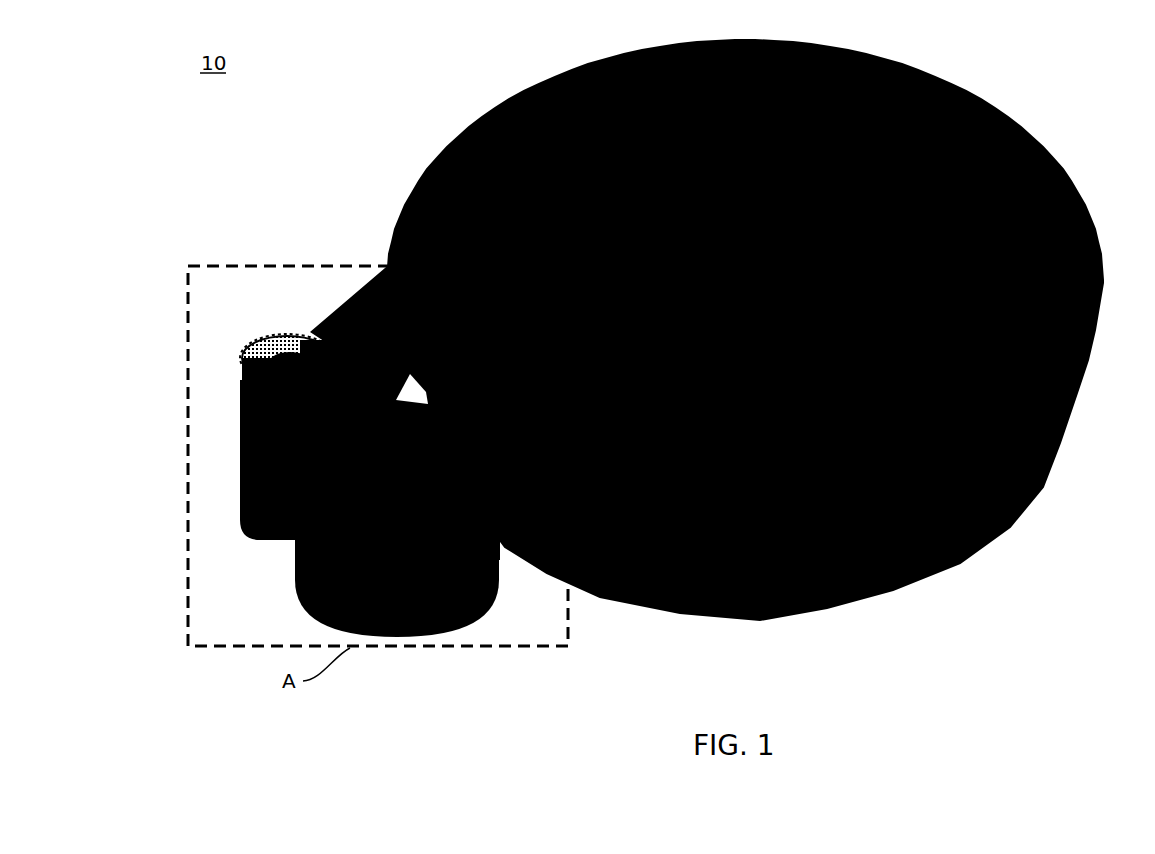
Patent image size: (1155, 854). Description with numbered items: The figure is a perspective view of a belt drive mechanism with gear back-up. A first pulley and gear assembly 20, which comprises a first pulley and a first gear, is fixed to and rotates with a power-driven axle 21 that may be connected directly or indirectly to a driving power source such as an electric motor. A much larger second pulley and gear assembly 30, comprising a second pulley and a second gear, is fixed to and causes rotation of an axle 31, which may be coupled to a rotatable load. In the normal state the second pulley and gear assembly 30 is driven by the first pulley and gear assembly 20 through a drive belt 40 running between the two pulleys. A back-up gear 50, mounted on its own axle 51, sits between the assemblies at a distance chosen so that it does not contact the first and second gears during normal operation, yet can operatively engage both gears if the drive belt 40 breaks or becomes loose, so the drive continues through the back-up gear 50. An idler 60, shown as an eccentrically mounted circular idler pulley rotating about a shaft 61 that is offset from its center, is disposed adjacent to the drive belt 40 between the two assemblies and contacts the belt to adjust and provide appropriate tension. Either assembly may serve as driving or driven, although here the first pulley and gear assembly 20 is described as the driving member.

The first pulley and gear assembly 20 is at (267, 342).
The axle 21 is at (252, 341).
The second pulley and gear assembly 30 is at (1040, 126).
The axle 31 is at (754, 268).
The drive belt 40 is at (240, 432).
The back-up gear 50 is at (380, 332).
The axle 51 is at (396, 323).
The idler 60 is at (364, 522).
The shaft 61 is at (386, 481).